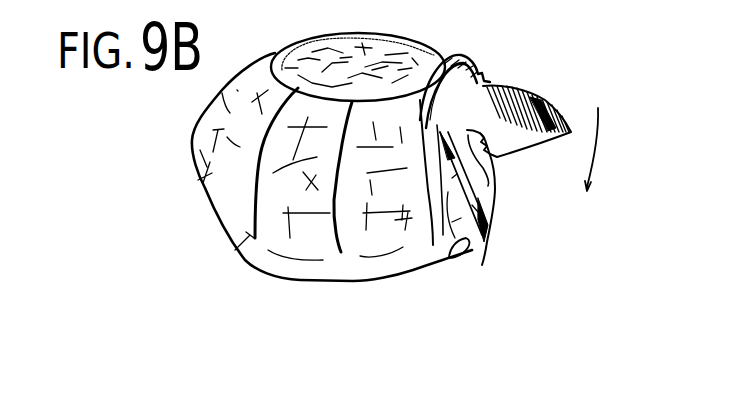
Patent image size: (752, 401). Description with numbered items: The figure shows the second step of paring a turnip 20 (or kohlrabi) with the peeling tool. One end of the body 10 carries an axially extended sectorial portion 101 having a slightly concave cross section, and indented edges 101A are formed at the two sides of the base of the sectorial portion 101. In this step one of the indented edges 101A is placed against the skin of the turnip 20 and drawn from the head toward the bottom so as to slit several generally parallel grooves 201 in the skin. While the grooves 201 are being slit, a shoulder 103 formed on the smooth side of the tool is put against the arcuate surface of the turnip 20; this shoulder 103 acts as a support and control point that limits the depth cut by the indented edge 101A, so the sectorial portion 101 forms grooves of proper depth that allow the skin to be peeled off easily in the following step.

The turnip 20 is at (287, 280).
The grooves 201 is at (255, 180).
The sectorial portion 101 is at (487, 68).
The indented edge 101A is at (421, 140).
The body 10 is at (482, 264).
The shoulder 103 is at (452, 248).